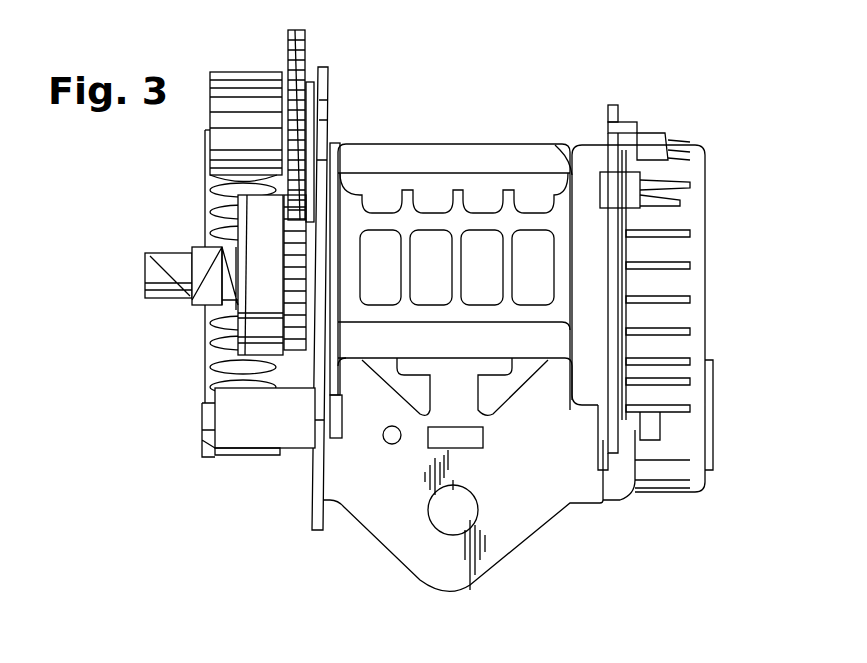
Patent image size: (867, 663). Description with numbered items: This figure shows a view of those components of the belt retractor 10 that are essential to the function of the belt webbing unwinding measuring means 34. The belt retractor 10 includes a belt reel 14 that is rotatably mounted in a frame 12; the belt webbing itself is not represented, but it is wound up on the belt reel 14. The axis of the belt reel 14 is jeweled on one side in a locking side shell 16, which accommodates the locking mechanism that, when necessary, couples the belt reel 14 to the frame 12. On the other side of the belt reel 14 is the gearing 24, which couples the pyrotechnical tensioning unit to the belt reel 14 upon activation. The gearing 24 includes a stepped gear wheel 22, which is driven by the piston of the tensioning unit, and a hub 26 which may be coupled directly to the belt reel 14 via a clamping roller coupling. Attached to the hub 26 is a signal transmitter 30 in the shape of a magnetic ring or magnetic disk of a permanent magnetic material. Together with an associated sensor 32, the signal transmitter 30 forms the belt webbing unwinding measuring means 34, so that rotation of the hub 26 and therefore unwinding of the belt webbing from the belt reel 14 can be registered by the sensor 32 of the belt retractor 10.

The belt retractor 10 is at (712, 95).
The frame 12 is at (527, 508).
The belt reel 14 is at (478, 222).
The locking side shell 16 is at (680, 282).
The stepped gear wheel 22 is at (237, 105).
The gearing 24 is at (198, 75).
The hub 26 is at (300, 230).
The signal transmitter 30 is at (238, 190).
The sensor 32 is at (207, 322).
The belt webbing unwinding measuring means 34 is at (186, 370).